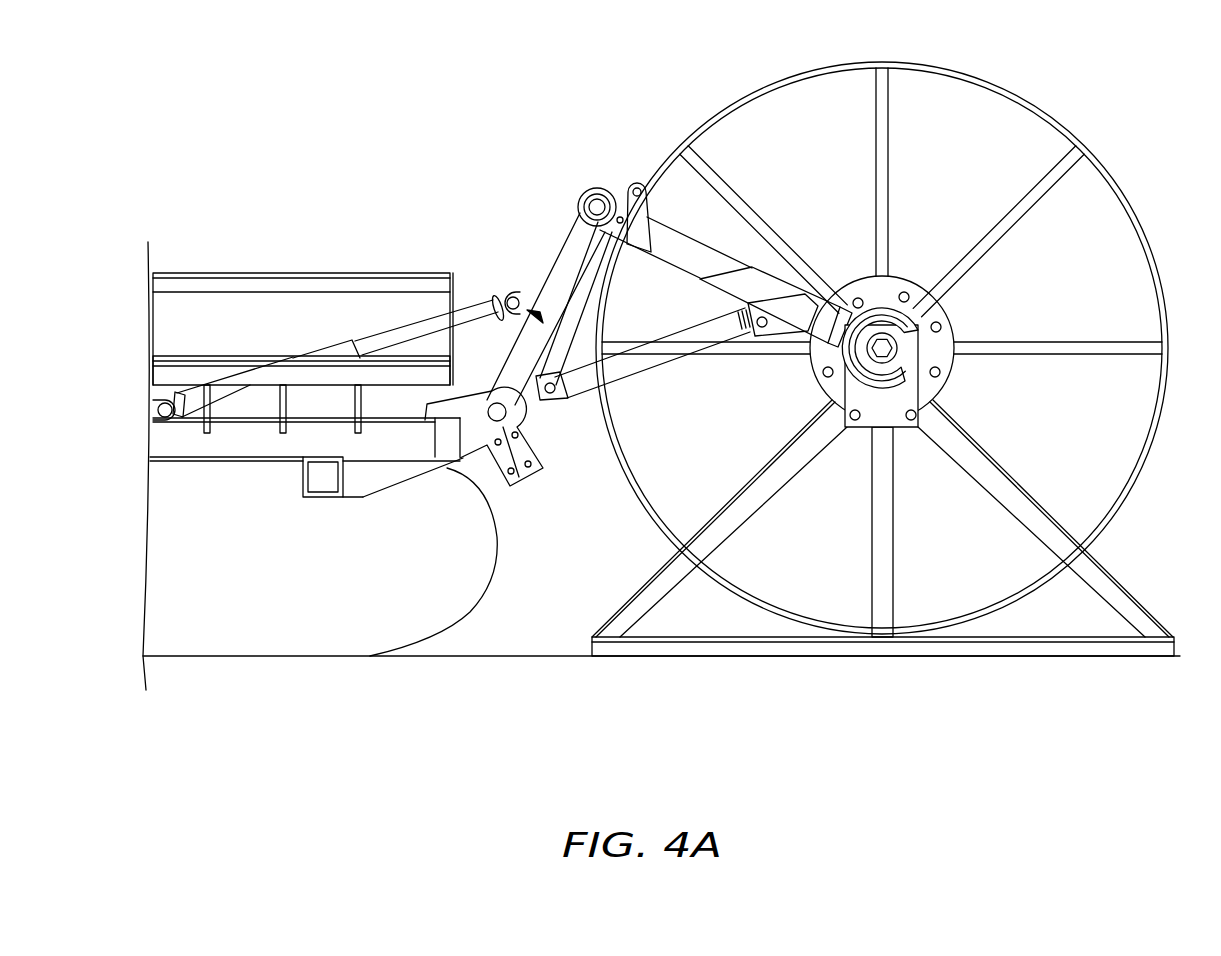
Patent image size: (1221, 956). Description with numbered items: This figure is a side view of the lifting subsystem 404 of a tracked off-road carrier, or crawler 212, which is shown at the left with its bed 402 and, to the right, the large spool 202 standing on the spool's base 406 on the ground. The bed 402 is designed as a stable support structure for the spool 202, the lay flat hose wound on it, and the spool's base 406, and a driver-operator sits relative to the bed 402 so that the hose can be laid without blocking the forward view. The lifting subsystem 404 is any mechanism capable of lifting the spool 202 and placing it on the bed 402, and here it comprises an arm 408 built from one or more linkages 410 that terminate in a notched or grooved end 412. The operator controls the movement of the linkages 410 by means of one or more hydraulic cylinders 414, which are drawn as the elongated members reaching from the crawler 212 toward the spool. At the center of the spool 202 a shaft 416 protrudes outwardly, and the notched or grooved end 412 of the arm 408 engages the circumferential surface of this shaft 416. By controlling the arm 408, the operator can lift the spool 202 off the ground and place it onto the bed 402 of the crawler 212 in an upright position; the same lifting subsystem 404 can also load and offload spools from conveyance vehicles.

The spool 202 is at (1100, 120).
The crawler 212 is at (440, 632).
The bed 402 is at (210, 378).
The lifting subsystem 404 is at (558, 180).
The spool's base 406 is at (630, 664).
The arm 408 is at (716, 240).
The linkages 410 is at (600, 190).
The notched or grooved end 412 is at (890, 307).
The hydraulic cylinders 414 is at (648, 370).
The shaft 416 is at (918, 330).